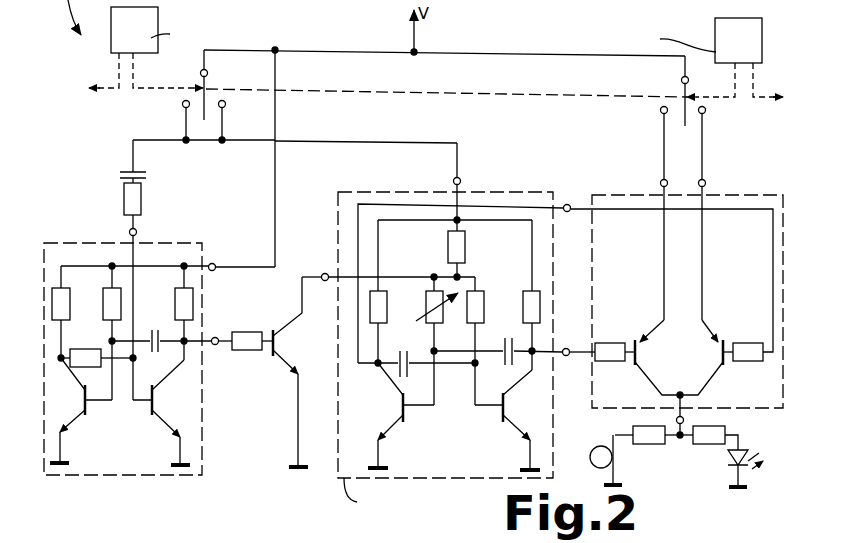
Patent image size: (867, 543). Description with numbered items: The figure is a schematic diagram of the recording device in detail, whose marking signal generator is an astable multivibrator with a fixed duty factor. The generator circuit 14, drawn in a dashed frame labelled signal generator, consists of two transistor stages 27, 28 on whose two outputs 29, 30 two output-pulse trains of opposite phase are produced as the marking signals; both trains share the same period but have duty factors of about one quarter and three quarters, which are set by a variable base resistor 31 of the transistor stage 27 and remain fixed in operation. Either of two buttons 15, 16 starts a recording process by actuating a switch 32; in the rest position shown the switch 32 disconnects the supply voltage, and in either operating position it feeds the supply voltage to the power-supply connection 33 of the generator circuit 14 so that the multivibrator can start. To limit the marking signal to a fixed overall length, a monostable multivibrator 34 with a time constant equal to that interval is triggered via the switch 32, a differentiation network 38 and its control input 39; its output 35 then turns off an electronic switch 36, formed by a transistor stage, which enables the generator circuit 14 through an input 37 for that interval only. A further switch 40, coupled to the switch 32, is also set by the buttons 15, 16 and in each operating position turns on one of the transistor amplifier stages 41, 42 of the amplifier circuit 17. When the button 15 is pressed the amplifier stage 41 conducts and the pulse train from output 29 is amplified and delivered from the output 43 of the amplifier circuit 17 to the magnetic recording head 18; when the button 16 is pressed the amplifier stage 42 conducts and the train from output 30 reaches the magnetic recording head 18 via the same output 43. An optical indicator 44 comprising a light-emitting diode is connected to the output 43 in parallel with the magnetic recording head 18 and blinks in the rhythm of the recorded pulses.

The generator circuit 14 is at (515, 191).
The button 15 is at (150, 18).
The button 16 is at (716, 33).
The amplifier circuit 17 is at (727, 192).
The magnetic recording head 18 is at (616, 456).
The transistor stage 27 is at (409, 419).
The transistor stage 28 is at (496, 419).
The output 29 is at (569, 213).
The output 30 is at (567, 356).
The variable base resistor 31 is at (427, 299).
The switch 32 is at (211, 80).
The power-supply connection 33 is at (461, 181).
The monostable multivibrator 34 is at (72, 241).
The output 35 is at (216, 346).
The electronic switch 36 is at (275, 368).
The input 37 is at (325, 272).
The differentiation network 38 is at (152, 185).
The control input 39 is at (137, 232).
The switch 40 is at (680, 88).
The transistor amplifier stage 41 is at (727, 329).
The transistor amplifier stage 42 is at (632, 329).
The output 43 is at (684, 419).
The optical indicator 44 is at (726, 458).